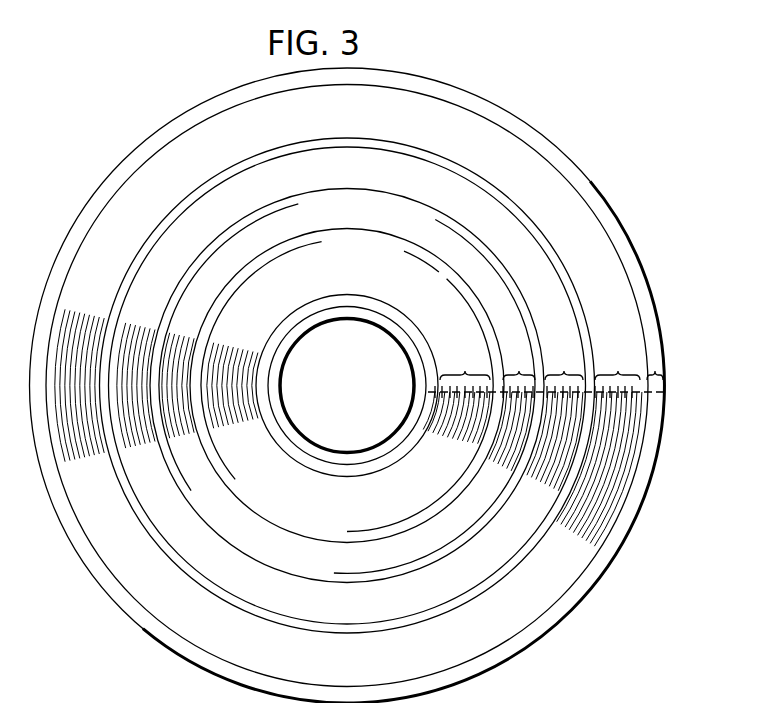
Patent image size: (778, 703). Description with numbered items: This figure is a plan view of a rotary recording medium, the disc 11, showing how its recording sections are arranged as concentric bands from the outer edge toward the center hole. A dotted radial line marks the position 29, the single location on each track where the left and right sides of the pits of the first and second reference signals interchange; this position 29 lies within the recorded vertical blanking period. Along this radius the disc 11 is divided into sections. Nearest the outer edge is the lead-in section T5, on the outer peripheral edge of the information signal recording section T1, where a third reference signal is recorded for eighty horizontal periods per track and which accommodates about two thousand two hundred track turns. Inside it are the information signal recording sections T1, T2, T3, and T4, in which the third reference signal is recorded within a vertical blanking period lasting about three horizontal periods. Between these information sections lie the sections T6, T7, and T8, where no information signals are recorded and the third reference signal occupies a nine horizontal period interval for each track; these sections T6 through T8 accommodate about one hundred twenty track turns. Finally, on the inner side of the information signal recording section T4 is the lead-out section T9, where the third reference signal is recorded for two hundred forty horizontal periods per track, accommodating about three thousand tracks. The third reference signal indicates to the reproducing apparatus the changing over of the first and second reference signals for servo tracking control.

The disc 11 is at (563, 151).
The position where pits interchange 29 is at (627, 394).
The information signal recording section T1 is at (617, 367).
The information signal recording section T2 is at (564, 367).
The information signal recording section T3 is at (519, 367).
The information signal recording section T4 is at (465, 367).
The lead-in section T5 is at (662, 372).
The section without information signals T6 is at (588, 400).
The section without information signals T7 is at (542, 399).
The section without information signals T8 is at (497, 399).
The lead-out section T9 is at (432, 388).